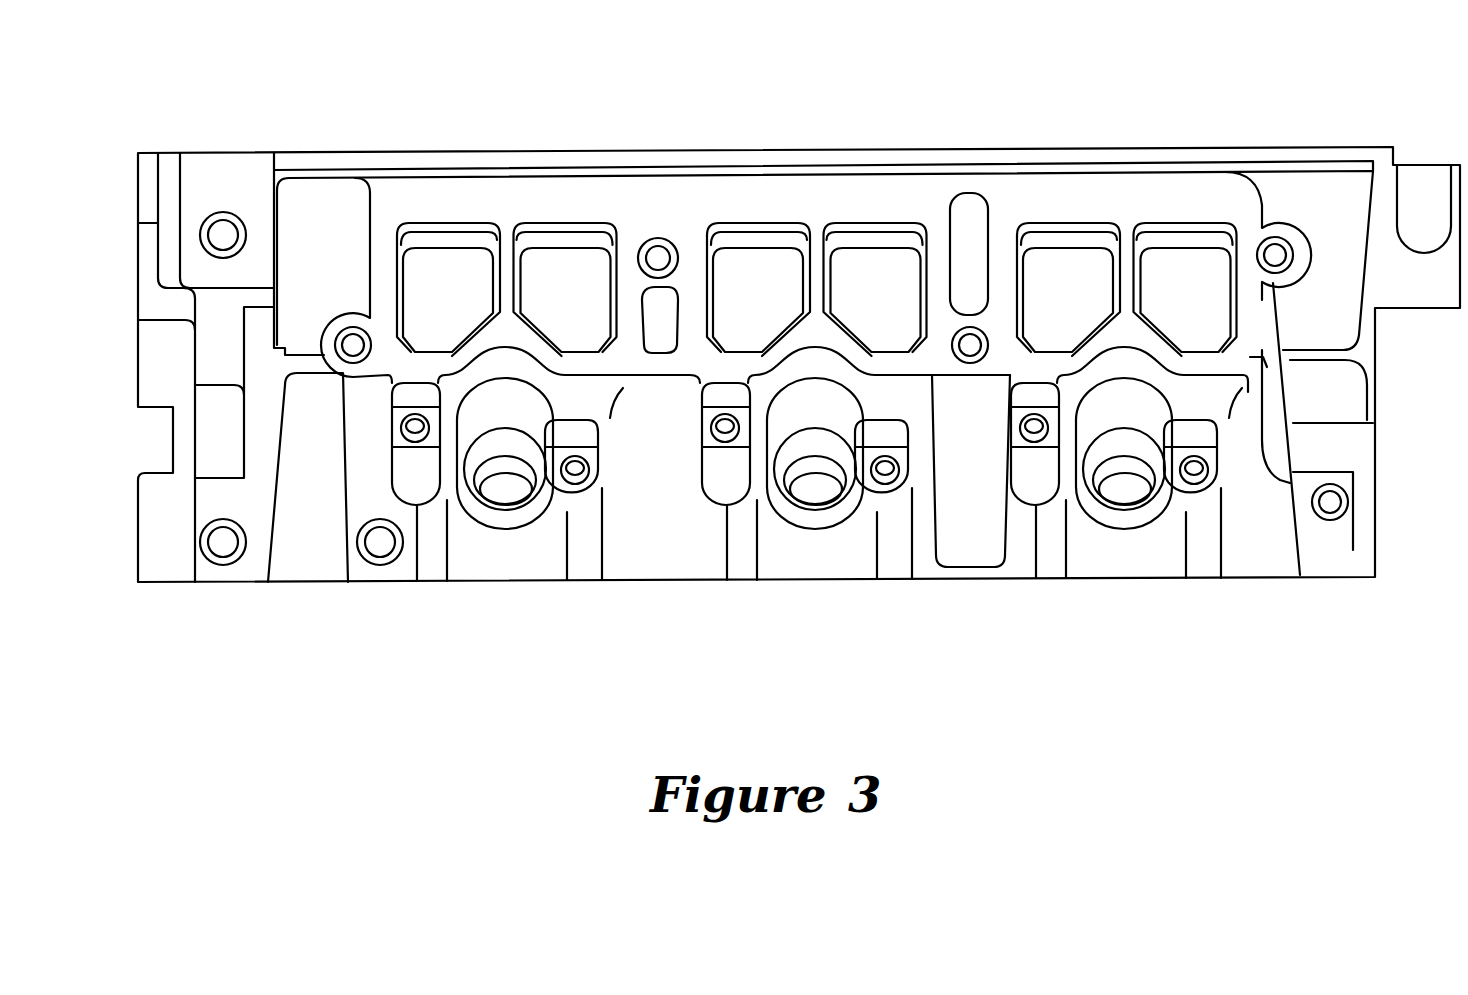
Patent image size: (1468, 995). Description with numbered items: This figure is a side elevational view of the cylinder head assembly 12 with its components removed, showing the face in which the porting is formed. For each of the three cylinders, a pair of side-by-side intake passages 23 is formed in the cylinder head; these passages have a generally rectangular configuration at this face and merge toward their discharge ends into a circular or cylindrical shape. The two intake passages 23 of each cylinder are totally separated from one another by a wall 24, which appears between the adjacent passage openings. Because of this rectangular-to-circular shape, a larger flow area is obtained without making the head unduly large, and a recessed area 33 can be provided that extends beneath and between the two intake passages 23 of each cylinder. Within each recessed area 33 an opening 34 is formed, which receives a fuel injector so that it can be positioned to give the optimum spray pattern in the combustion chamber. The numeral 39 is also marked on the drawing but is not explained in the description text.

The cylinder head assembly 12 is at (906, 556).
The intake passages 23 is at (446, 265).
The wall 24 is at (508, 245).
The recessed area 33 is at (487, 412).
The opening 34 is at (533, 480).
The gasket arch 39 is at (1125, 360).